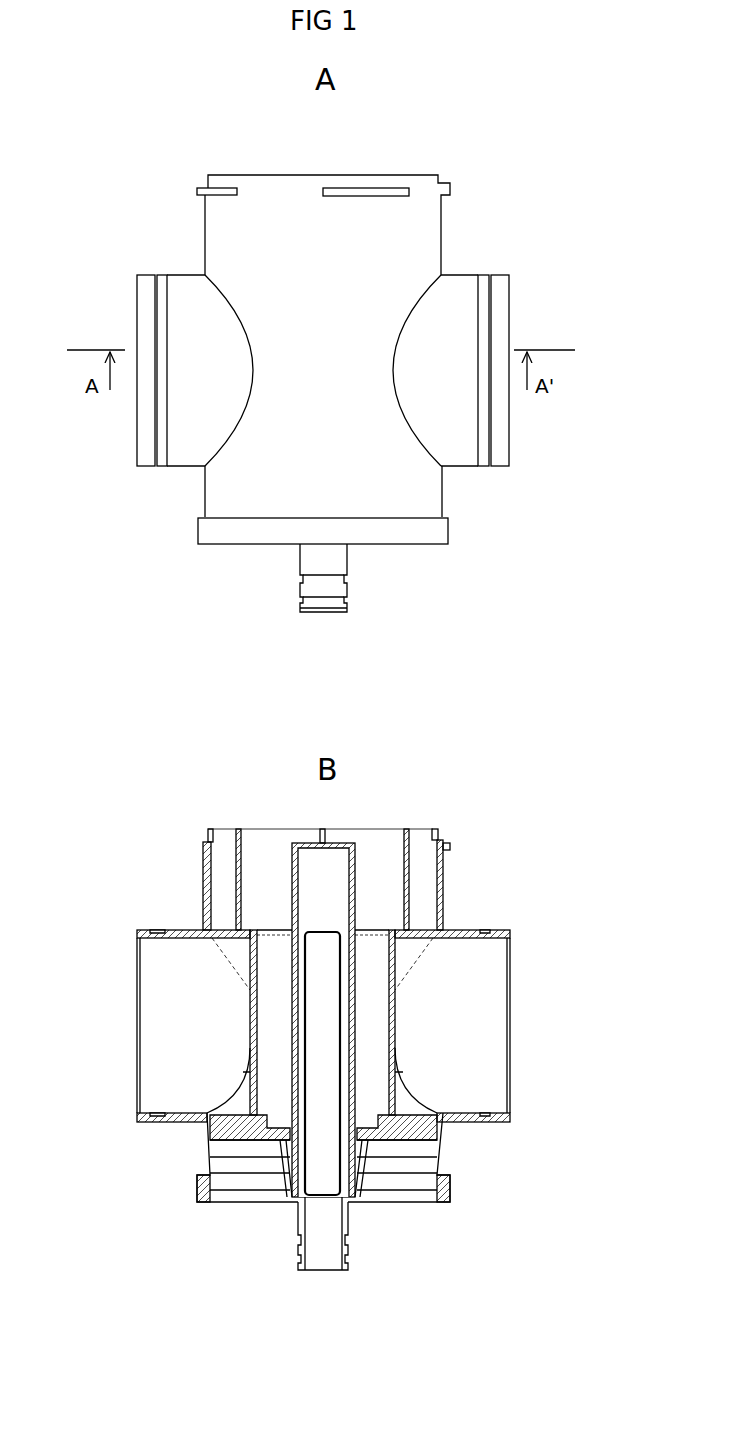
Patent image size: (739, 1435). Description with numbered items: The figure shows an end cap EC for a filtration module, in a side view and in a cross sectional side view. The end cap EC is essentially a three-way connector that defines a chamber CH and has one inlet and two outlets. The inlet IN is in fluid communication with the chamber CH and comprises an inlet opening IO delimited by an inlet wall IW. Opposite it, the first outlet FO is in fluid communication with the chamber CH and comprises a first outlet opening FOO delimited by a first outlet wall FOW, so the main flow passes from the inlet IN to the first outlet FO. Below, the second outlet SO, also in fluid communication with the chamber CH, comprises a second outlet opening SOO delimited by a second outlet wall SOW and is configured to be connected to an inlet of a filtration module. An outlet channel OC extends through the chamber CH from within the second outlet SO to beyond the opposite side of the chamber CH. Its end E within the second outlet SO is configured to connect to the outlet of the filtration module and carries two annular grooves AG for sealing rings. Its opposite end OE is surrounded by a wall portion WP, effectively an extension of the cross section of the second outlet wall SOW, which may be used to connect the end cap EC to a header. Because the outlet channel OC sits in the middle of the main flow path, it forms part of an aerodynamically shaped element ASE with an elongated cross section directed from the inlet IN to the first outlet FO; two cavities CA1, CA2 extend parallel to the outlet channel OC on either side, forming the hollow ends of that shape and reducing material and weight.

In FIG. 1A, the inlet IN is at (127, 263).
In FIG. 1A, the inlet wall IW is at (146, 275).
In FIG. 1B, the inlet wall IW is at (170, 1122).
In FIG. 1A, the inlet opening IO is at (115, 308).
In FIG. 1B, the inlet opening IO is at (135, 1072).
In FIG. 1A, the end cap EC is at (438, 222).
In FIG. 1B, the end cap EC is at (443, 888).
In FIG. 1A, the first outlet FO is at (508, 248).
In FIG. 1B, the first outlet FO is at (520, 922).
In FIG. 1A, the first outlet opening FOO is at (510, 292).
In FIG. 1B, the first outlet opening FOO is at (510, 992).
In FIG. 1A, the first outlet wall FOW is at (496, 453).
In FIG. 1B, the first outlet wall FOW is at (508, 1123).
In FIG. 1A, the second outlet wall SOW is at (198, 530).
In FIG. 1B, the second outlet wall SOW is at (197, 1190).
In FIG. 1A, the second outlet SO is at (230, 547).
In FIG. 1B, the second outlet SO is at (252, 1205).
In FIG. 1A, the second outlet opening SOO is at (250, 546).
In FIG. 1B, the second outlet opening SOO is at (232, 1205).
In FIG. 1A, the end of the outlet channel E is at (335, 556).
In FIG. 1B, the end of the outlet channel E is at (350, 1248).
In FIG. 1A, the annular grooves AG is at (333, 600).
In FIG. 1B, the first cavity CA1 is at (278, 975).
In FIG. 1B, the second cavity CA2 is at (378, 968).
In FIG. 1B, the wall portion WP is at (208, 885).
In FIG. 1B, the opposite end of the outlet channel OE is at (351, 880).
In FIG. 1B, the outlet channel OC is at (327, 1152).
In FIG. 1B, the chamber CH is at (470, 1040).
In FIG. 1B, the aerodynamically shaped element ASE is at (397, 1093).